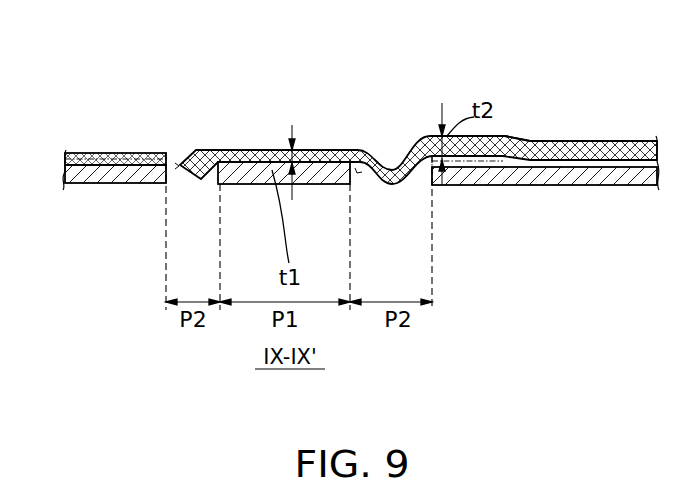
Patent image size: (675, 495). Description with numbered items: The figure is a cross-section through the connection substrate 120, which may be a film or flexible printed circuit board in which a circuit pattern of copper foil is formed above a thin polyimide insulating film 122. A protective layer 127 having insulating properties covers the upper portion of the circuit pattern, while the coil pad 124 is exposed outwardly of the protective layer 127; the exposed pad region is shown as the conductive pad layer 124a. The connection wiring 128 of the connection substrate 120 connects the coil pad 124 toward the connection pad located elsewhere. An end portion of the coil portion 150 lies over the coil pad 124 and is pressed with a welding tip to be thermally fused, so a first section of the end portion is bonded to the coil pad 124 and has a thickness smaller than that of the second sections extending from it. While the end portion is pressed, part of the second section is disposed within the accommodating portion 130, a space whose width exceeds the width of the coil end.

The connection substrate 120 is at (475, 187).
The insulating film 122 is at (238, 172).
The coil pad 124 is at (416, 195).
The conductive layer portion 124a is at (329, 163).
The protective layer 127 is at (125, 153).
The connection wiring 128 is at (97, 167).
The accommodating portion 130 is at (212, 150).
The coil portion 150 is at (585, 138).